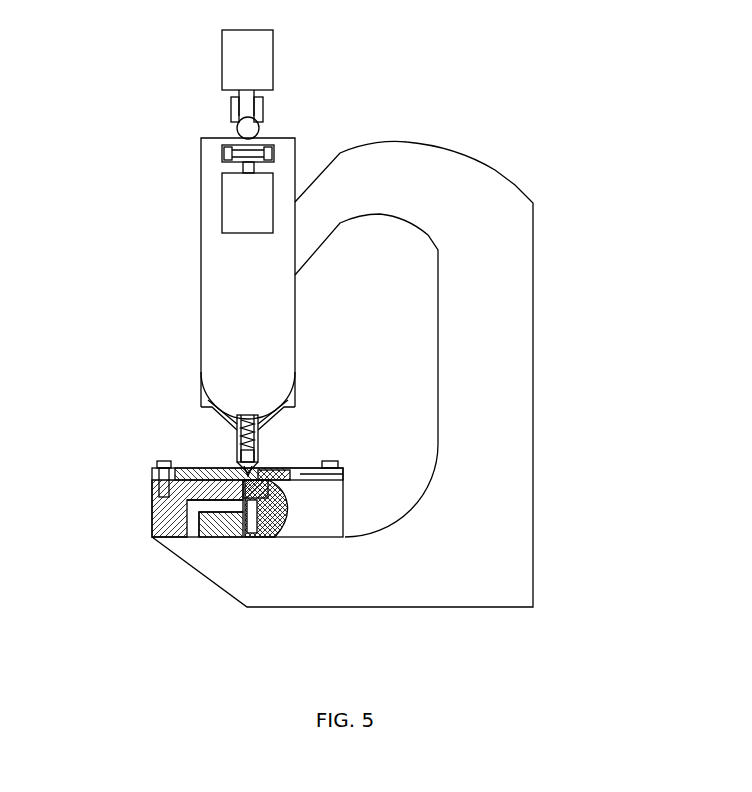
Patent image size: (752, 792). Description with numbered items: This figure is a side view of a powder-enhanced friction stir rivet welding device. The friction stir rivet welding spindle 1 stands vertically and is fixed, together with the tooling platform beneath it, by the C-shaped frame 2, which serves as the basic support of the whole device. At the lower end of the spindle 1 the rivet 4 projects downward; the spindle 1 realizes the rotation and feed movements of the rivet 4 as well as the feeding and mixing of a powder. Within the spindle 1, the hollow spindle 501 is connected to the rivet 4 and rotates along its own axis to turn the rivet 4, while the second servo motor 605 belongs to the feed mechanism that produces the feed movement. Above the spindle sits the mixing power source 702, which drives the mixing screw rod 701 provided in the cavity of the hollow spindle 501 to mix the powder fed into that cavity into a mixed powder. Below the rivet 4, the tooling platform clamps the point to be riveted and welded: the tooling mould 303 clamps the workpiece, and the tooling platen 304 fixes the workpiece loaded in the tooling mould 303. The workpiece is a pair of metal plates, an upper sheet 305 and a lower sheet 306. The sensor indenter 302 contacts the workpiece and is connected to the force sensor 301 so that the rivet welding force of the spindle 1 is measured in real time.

The friction stir rivet welding spindle 1 is at (217, 295).
The C-shaped frame 2 is at (493, 210).
The rivet 4 is at (250, 466).
The force sensor 301 is at (217, 528).
The sensor indenter 302 is at (247, 497).
The tooling mould 303 is at (165, 513).
The tooling platen 304 is at (176, 472).
The upper sheet 305 is at (282, 472).
The lower sheet 306 is at (275, 487).
The hollow spindle 501 is at (240, 455).
The second servo motor 605 is at (246, 190).
The mixing screw rod 701 is at (240, 430).
The mixing power source 702 is at (237, 48).